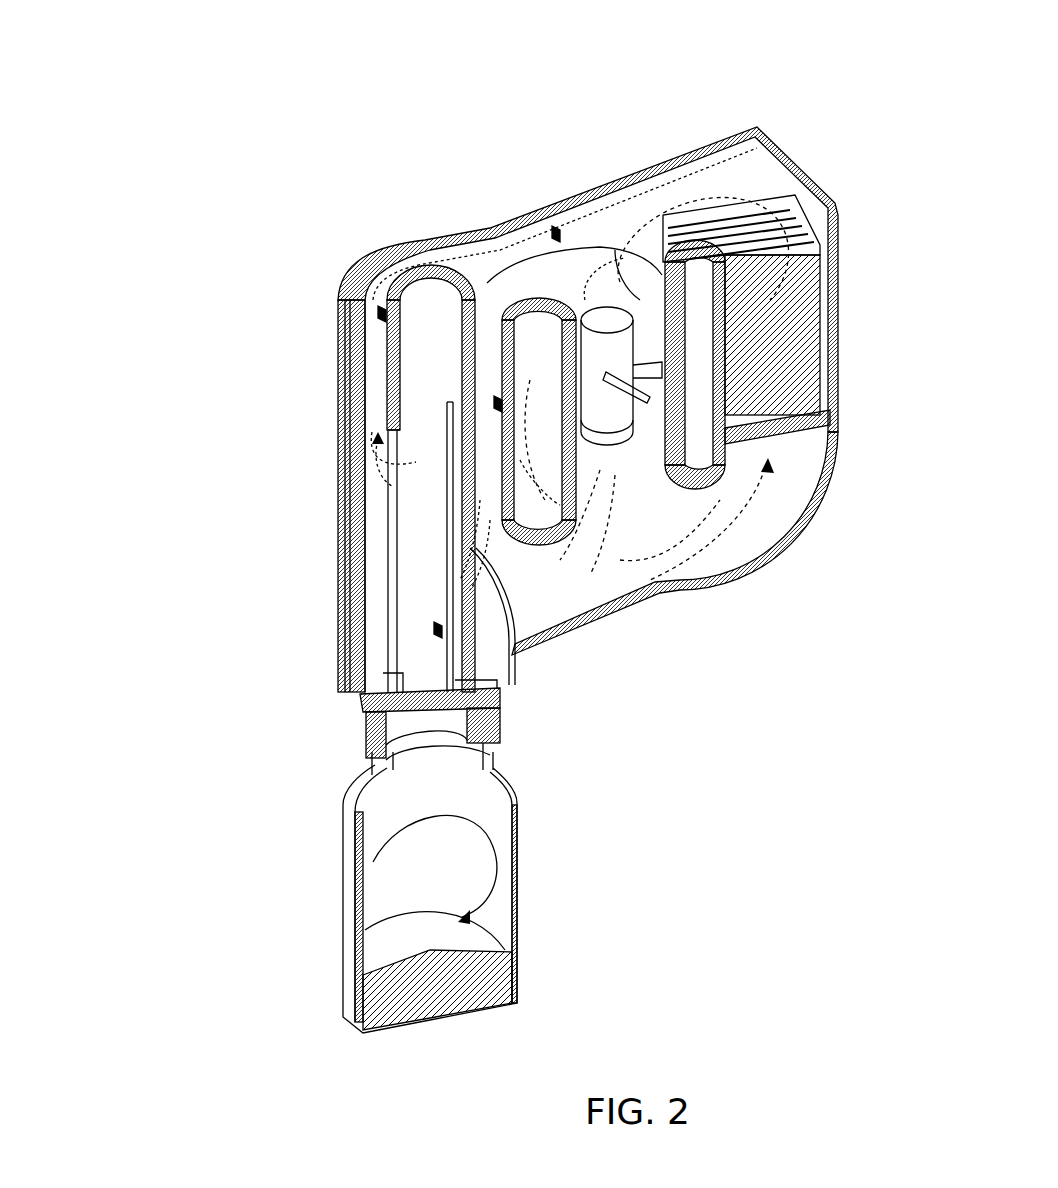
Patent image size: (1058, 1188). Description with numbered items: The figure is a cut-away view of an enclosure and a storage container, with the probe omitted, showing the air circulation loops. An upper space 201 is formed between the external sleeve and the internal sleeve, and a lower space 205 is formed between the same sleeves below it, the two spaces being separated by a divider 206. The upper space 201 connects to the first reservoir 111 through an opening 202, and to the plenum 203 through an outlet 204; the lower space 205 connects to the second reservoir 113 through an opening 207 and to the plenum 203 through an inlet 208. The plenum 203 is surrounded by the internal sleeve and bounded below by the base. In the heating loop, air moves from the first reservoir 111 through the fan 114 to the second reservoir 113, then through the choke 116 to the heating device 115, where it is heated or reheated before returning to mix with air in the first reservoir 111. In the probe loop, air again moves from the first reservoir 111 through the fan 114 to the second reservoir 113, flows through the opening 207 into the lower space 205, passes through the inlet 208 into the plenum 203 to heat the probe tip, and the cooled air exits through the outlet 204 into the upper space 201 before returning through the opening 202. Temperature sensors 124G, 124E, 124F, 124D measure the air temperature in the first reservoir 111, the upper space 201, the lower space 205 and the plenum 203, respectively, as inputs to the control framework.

The first reservoir 111 is at (600, 240).
The second reservoir 113 is at (630, 513).
The fan 114 is at (640, 350).
The heating device 115 is at (775, 360).
The choke 116 is at (768, 432).
The temperature sensor 124D is at (433, 643).
The temperature sensor 124E is at (380, 296).
The temperature sensor 124F is at (497, 390).
The temperature sensor 124G is at (560, 222).
The upper space 201 is at (372, 354).
The opening 202 is at (503, 268).
The plenum 203 is at (427, 598).
The outlet 204 is at (392, 520).
The lower space 205 is at (497, 470).
The divider 206 is at (490, 340).
The opening 207 is at (515, 595).
The inlet 208 is at (450, 595).